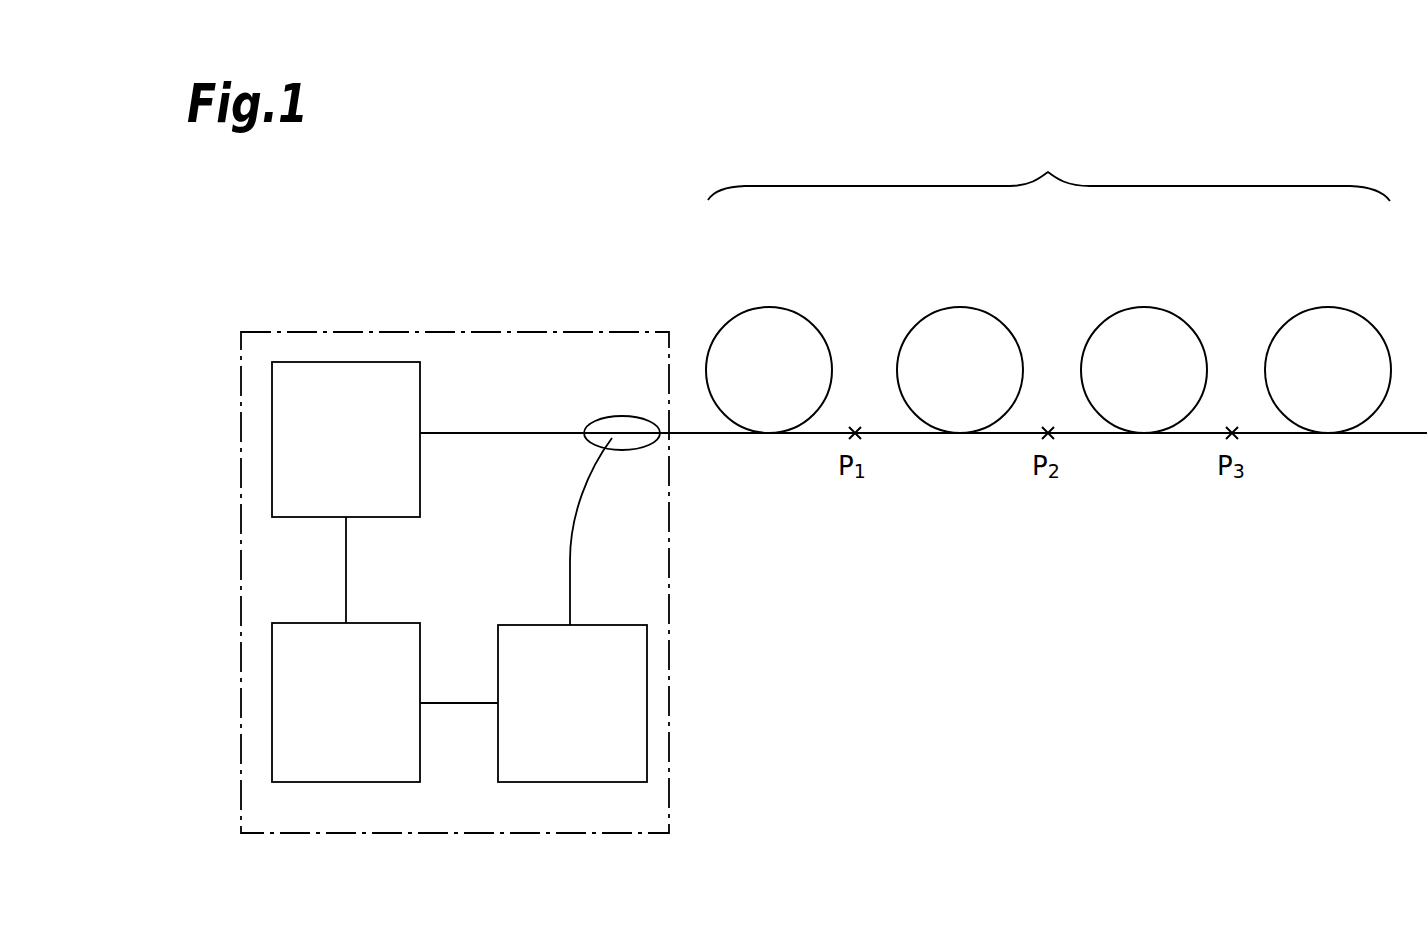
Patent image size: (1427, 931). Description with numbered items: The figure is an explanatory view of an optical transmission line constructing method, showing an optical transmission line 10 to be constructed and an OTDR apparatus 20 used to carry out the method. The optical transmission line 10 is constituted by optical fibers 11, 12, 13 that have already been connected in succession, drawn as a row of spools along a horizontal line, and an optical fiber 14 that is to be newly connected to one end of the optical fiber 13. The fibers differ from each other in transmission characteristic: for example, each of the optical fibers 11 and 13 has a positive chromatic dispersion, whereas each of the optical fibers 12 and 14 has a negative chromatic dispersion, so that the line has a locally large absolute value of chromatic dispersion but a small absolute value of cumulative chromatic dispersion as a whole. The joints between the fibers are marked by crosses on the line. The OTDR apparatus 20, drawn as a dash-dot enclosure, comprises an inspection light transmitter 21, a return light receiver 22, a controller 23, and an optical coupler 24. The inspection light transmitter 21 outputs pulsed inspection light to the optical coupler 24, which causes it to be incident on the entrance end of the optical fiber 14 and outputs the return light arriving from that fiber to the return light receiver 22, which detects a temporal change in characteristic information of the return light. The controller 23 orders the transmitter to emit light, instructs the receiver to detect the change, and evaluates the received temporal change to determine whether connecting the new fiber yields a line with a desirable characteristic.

The optical transmission line 10 is at (1049, 169).
The optical fiber 11 is at (1327, 306).
The optical fiber 12 is at (1143, 306).
The optical fiber 13 is at (954, 306).
The optical fiber 14 is at (768, 306).
The OTDR apparatus 20 is at (443, 332).
The inspection light transmitter 21 is at (272, 498).
The return light receiver 22 is at (647, 758).
The controller 23 is at (272, 765).
The optical coupler 24 is at (608, 417).